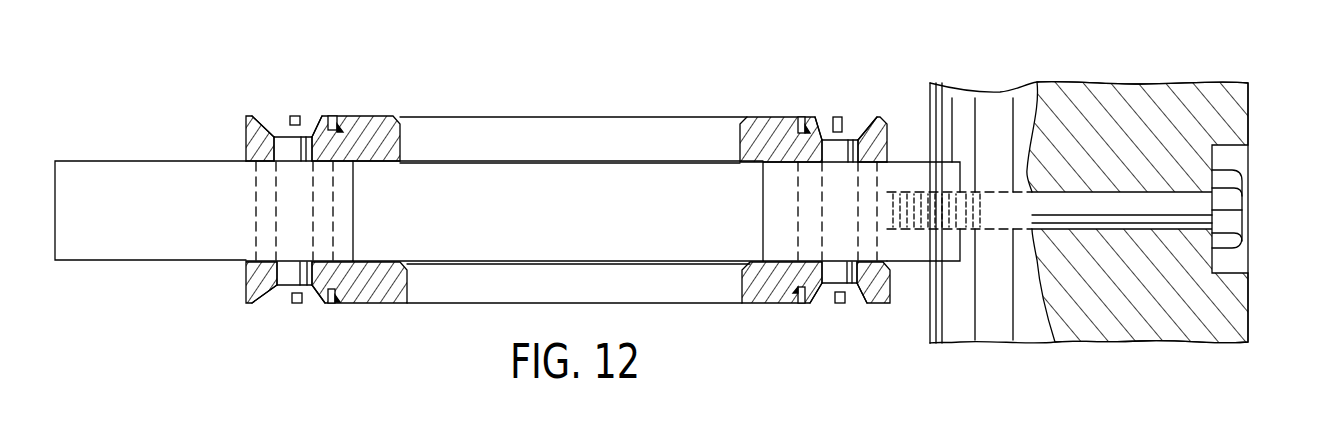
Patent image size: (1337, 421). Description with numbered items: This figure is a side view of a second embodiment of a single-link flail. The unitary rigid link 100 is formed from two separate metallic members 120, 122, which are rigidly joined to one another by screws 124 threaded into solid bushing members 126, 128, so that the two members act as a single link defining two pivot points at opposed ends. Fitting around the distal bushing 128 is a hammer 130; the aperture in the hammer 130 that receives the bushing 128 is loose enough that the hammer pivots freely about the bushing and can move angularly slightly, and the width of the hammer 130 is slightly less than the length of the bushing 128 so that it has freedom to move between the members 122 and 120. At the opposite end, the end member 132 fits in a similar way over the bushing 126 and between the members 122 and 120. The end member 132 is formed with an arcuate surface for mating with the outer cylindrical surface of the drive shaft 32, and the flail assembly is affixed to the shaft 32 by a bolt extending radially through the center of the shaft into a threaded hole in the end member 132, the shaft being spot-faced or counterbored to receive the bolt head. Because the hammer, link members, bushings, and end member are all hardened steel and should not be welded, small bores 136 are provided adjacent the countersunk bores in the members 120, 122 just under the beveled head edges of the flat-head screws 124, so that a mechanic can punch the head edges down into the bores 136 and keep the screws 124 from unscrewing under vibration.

The unitary rigid link 100 is at (698, 65).
The drive shaft 32 is at (1248, 118).
The metallic member 120 is at (467, 307).
The metallic member 122 is at (503, 127).
The screws 124 is at (308, 115).
The solid bushing member 126 is at (798, 200).
The distal bushing 128 is at (333, 203).
The hammer 130 is at (102, 175).
The end member 132 is at (905, 163).
The small bores 136 is at (355, 122).